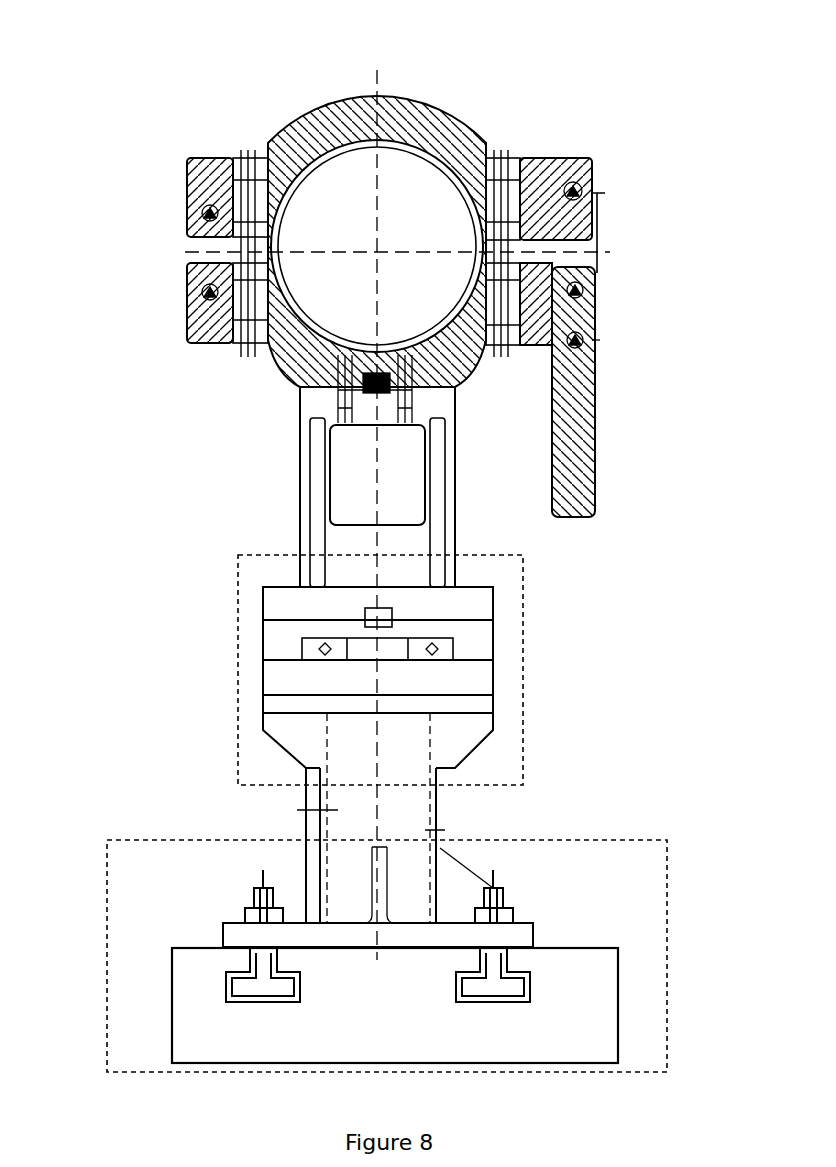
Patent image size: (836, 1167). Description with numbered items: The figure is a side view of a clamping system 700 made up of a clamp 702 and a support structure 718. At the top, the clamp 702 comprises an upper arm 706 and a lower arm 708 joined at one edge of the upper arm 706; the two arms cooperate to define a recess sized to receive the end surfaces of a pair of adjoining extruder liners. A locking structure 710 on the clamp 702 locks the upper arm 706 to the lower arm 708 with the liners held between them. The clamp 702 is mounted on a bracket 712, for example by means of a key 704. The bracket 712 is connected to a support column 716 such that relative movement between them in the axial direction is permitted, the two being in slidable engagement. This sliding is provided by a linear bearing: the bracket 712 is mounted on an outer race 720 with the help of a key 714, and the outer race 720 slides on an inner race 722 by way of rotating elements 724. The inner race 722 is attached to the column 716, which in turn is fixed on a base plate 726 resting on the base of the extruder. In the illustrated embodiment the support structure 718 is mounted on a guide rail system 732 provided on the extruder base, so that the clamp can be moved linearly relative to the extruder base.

The clamping system 700 is at (612, 93).
The clamp 702 is at (187, 190).
The key 704 is at (358, 390).
The upper arm 706 is at (333, 97).
The lower arm 708 is at (252, 352).
The locking structure 710 is at (598, 260).
The bracket 712 is at (300, 463).
The key 714 is at (363, 620).
The support column 716 is at (440, 828).
The support structure 718 is at (238, 578).
The outer race 720 is at (493, 643).
The inner race 722 is at (493, 688).
The rotating elements 724 is at (297, 648).
The base plate 726 is at (535, 928).
The guide rail system 732 is at (107, 853).